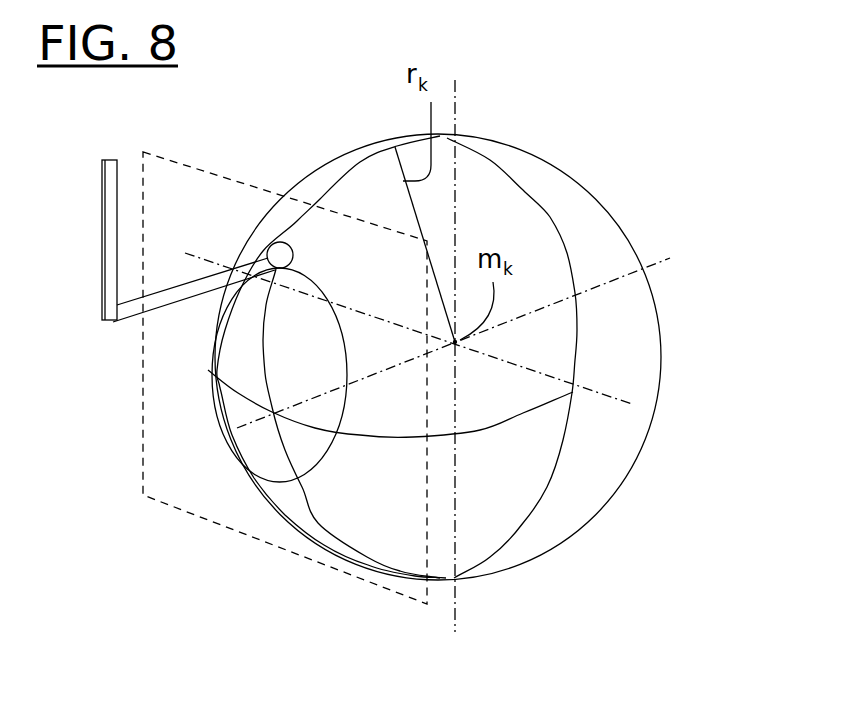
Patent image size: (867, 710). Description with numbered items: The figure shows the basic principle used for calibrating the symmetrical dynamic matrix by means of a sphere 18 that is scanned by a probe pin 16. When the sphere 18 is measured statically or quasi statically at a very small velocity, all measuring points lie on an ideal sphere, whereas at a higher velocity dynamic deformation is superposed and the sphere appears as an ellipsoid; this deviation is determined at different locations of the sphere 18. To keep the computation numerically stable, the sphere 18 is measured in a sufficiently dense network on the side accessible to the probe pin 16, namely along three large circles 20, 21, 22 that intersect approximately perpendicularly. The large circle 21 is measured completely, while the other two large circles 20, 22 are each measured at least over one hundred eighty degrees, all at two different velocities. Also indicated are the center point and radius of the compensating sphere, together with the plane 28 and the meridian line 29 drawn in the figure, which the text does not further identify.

The probe pin 16 is at (132, 320).
The sphere 18 is at (657, 390).
The large circle 20 is at (350, 172).
The large circle 21 is at (557, 222).
The large circle 22 is at (480, 428).
The plane 28 is at (184, 498).
The meridian circle 29 is at (280, 483).